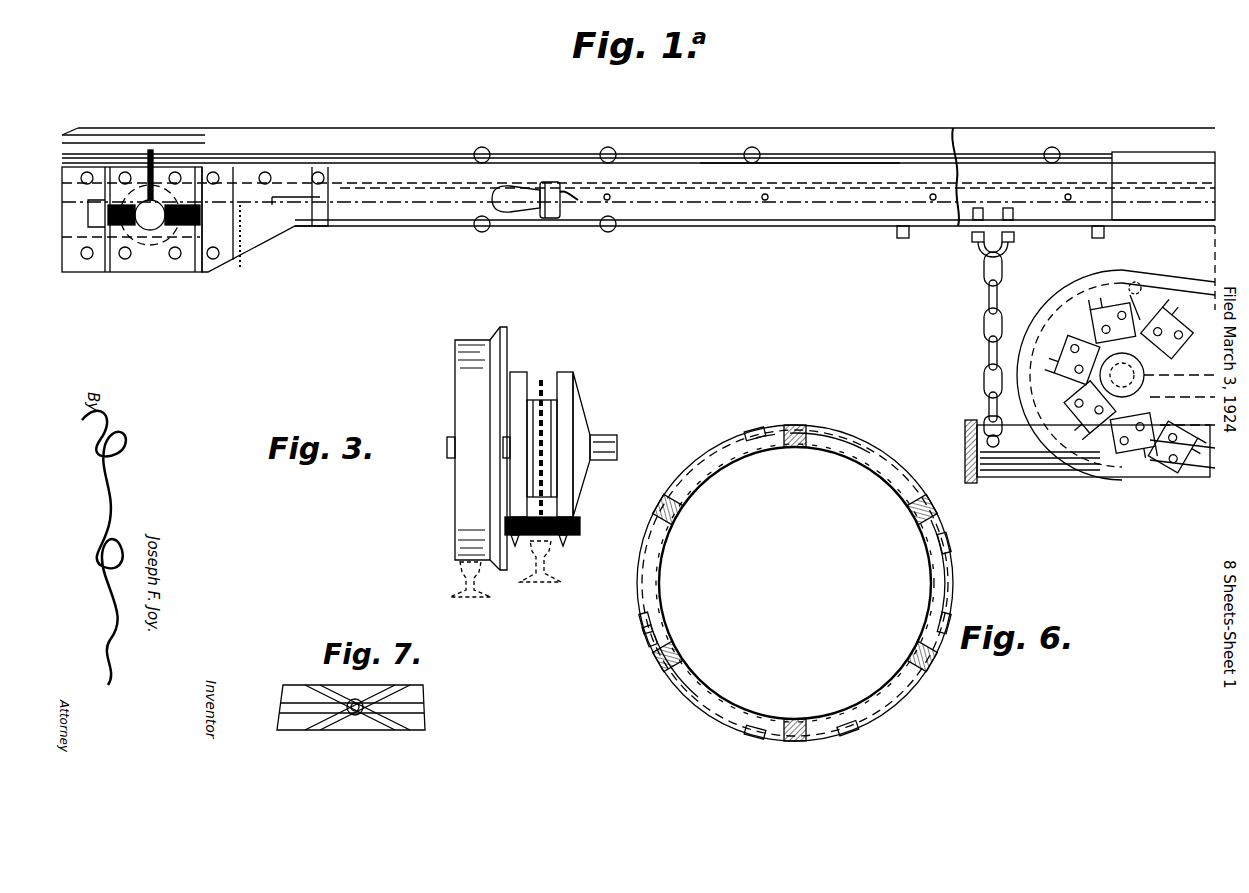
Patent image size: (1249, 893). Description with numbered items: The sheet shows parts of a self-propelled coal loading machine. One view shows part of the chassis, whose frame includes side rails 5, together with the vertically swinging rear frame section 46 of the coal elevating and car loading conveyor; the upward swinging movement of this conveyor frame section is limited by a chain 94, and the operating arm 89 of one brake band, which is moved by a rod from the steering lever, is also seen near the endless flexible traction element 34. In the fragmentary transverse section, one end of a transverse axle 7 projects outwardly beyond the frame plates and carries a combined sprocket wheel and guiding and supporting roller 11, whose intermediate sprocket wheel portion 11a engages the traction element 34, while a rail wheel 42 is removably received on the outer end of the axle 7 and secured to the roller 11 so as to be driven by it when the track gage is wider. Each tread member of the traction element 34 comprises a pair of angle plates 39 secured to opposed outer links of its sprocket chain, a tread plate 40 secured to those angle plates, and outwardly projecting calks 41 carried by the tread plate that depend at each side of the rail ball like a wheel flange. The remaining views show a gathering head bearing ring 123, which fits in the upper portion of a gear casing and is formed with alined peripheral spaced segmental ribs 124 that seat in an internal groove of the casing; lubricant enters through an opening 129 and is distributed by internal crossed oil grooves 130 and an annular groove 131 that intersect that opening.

In FIG. 1a, the rear frame section 46 is at (798, 178).
In FIG. 1a, the chain 94 is at (975, 316).
In FIG. 1a, the operating arm 89 is at (1137, 305).
In FIG. 1a, the side rail 5 is at (1042, 452).
In FIG. 1a, the endless flexible traction element 34 is at (1182, 477).
In FIG. 3, the rail wheel 42 is at (455, 372).
In FIG. 3, the intermediate sprocket wheel portion 11a is at (543, 380).
In FIG. 3, the combined sprocket wheel and guiding and supporting roller 11 is at (568, 372).
In FIG. 3, the transverse axle 7 is at (604, 437).
In FIG. 3, the angle plate 39 is at (520, 512).
In FIG. 3, the tread plate 40 is at (574, 531).
In FIG. 3, the calk 41 is at (564, 543).
In FIG. 6, the segmental rib 124 is at (952, 594).
In FIG. 6, the bearing ring 123 is at (887, 690).
In FIG. 7, the bearing ring 123 is at (293, 694).
In FIG. 6, the crossed oil groove 130 is at (889, 485).
In FIG. 7, the crossed oil groove 130 is at (340, 692).
In FIG. 6, the opening 129 is at (794, 742).
In FIG. 7, the opening 129 is at (355, 714).
In FIG. 7, the annular groove 131 is at (405, 700).